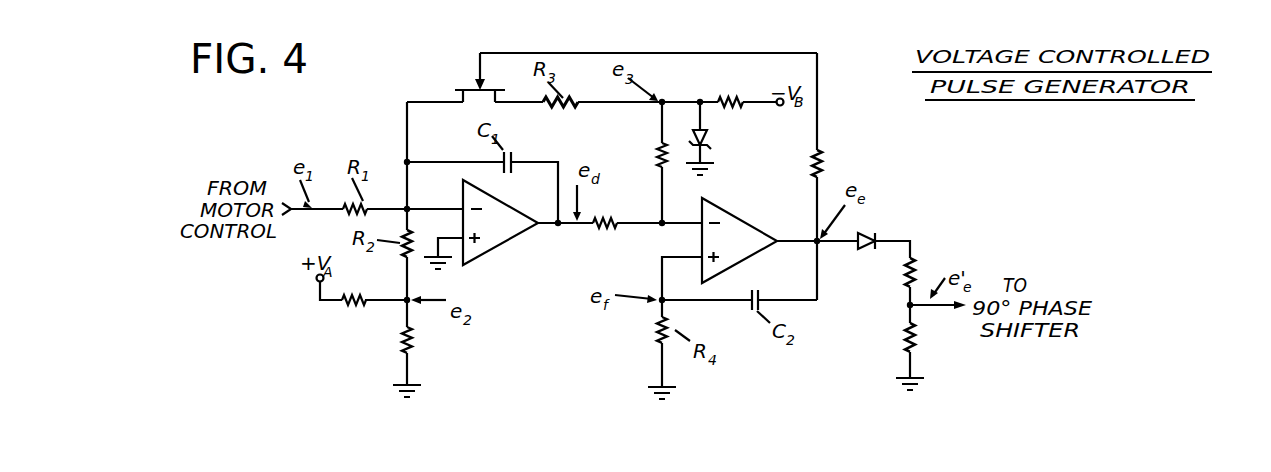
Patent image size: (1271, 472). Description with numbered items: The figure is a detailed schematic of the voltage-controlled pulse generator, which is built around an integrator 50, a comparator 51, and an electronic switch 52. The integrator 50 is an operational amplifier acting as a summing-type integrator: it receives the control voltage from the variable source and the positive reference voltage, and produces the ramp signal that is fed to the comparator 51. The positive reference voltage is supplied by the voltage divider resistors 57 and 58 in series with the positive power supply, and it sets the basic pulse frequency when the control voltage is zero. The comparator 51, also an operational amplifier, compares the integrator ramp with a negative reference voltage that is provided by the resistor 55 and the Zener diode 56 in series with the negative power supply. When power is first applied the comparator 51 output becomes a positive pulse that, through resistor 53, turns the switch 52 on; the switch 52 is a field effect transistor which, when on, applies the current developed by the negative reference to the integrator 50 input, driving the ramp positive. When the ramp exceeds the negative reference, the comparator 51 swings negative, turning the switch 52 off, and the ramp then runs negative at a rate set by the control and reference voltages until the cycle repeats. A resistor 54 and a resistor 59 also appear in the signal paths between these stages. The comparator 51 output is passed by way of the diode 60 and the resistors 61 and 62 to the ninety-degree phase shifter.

The integrator 50 is at (508, 234).
The comparator 51 is at (725, 212).
The electronic switch 52 is at (468, 88).
The resistor 53 is at (825, 165).
The resistor 54 is at (655, 158).
The resistor 55 is at (727, 97).
The Zener diode 56 is at (710, 138).
The voltage divider resistor 57 is at (352, 311).
The voltage divider resistor 58 is at (413, 336).
The resistor 59 is at (607, 218).
The diode 60 is at (878, 233).
The resistor 61 is at (900, 273).
The resistor 62 is at (900, 341).